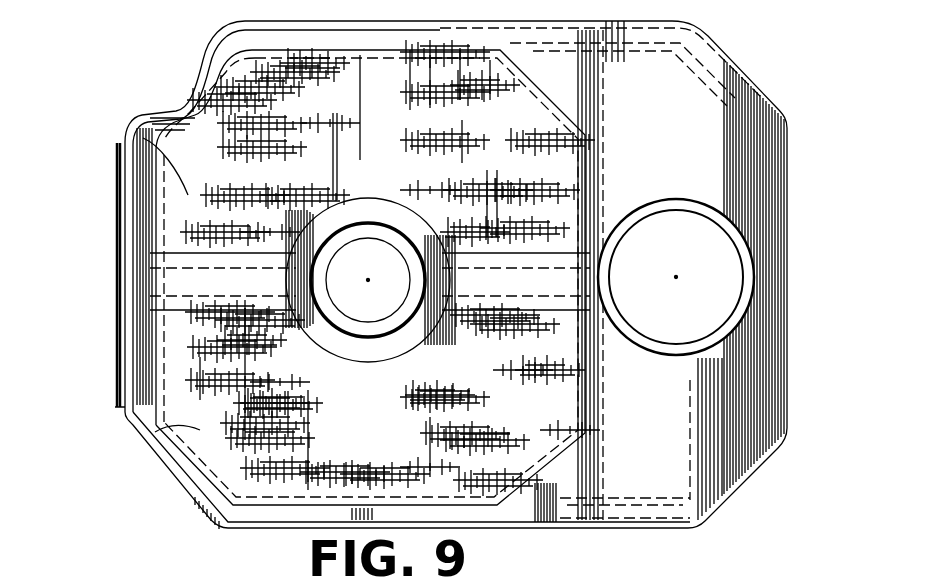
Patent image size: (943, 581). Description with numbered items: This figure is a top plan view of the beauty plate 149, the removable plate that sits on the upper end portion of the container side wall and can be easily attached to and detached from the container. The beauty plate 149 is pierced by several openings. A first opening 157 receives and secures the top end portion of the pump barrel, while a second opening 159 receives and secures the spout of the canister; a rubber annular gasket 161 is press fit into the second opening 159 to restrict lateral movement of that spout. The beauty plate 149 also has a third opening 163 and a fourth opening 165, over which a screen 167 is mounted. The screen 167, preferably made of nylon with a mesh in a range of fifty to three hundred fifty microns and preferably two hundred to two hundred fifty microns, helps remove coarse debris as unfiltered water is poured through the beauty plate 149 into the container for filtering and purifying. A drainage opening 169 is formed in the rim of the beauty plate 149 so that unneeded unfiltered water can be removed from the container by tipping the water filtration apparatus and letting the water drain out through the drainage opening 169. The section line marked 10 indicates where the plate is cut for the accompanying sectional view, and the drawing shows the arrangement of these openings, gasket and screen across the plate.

The section line 10- 10 is at (95, 283).
The beauty plate 149 is at (192, 477).
The first opening 157 is at (730, 284).
The second opening 159 is at (386, 297).
The rubber annular gasket 161 is at (356, 225).
The third opening 163 is at (133, 127).
The fourth opening 165 is at (160, 432).
The screen 167 is at (583, 140).
The drainage opening 169 is at (182, 108).